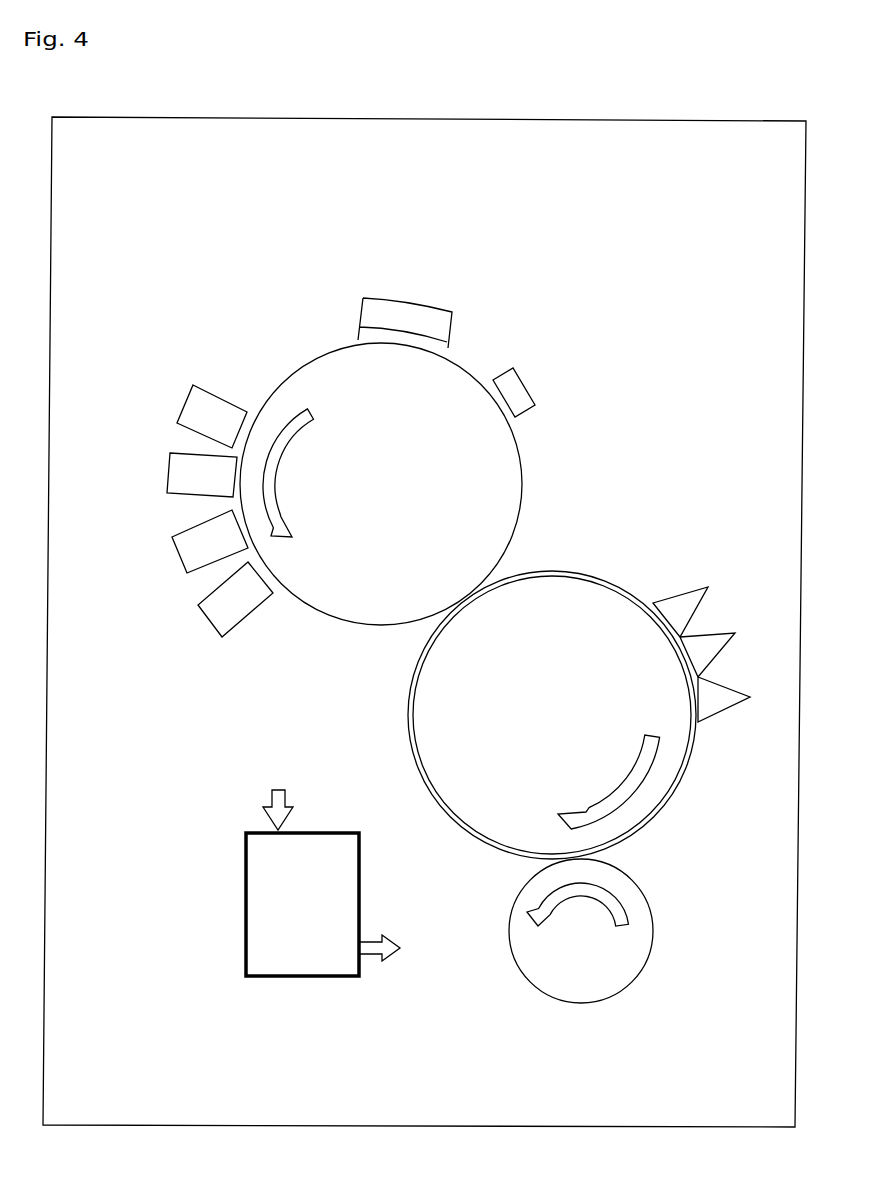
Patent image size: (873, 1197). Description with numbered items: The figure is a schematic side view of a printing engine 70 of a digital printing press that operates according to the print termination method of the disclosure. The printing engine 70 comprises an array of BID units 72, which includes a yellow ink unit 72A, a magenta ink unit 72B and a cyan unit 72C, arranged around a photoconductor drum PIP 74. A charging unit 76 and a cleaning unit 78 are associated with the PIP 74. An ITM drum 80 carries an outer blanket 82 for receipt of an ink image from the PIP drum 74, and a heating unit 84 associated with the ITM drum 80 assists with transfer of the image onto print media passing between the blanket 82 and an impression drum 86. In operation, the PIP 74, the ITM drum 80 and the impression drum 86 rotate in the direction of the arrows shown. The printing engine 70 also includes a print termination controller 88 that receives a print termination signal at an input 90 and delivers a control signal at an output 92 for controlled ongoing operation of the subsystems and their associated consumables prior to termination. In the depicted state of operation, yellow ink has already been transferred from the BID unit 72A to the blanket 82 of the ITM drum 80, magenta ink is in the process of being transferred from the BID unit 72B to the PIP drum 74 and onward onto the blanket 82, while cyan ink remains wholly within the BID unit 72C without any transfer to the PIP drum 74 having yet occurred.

The printing engine 70 is at (424, 622).
The array of BID units 72 is at (167, 498).
The yellow ink unit 72A is at (187, 477).
The magenta ink unit 72B is at (200, 547).
The cyan unit 72C is at (228, 607).
The photoconductor drum PIP 74 is at (381, 484).
The charging unit 76 is at (410, 317).
The cleaning unit 78 is at (518, 388).
The ITM drum 80 is at (552, 715).
The outer blanket 82 is at (595, 578).
The heating unit 84 is at (752, 581).
The impression drum 86 is at (581, 931).
The print termination controller 88 is at (302, 904).
The input 90 is at (272, 803).
The output 92 is at (393, 952).